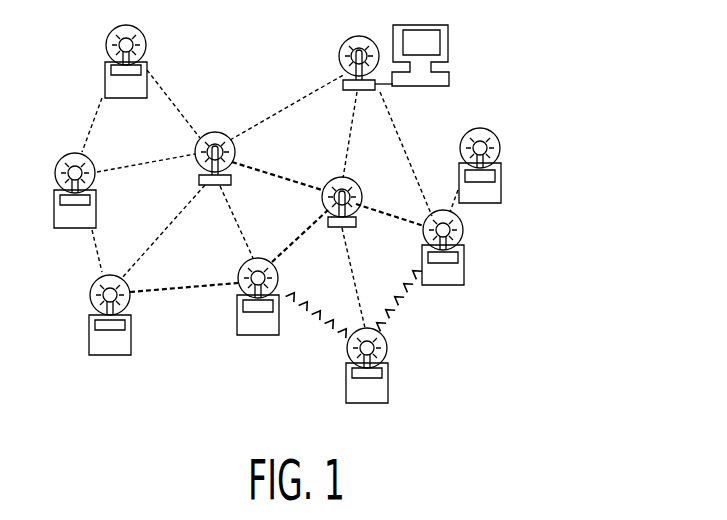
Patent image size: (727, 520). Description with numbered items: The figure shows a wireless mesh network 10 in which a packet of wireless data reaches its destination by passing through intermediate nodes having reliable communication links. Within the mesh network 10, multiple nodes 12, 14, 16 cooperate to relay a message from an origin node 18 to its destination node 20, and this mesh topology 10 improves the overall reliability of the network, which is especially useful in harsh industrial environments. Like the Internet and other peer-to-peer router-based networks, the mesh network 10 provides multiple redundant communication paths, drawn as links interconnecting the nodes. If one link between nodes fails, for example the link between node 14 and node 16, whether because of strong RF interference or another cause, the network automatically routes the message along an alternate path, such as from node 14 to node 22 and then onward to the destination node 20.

The wireless mesh network 10 is at (533, 109).
The node 12 is at (110, 355).
The node 14 is at (265, 335).
The node 16 is at (332, 188).
The origin node 18 is at (73, 228).
The destination node 20 is at (443, 285).
The node 22 is at (380, 393).